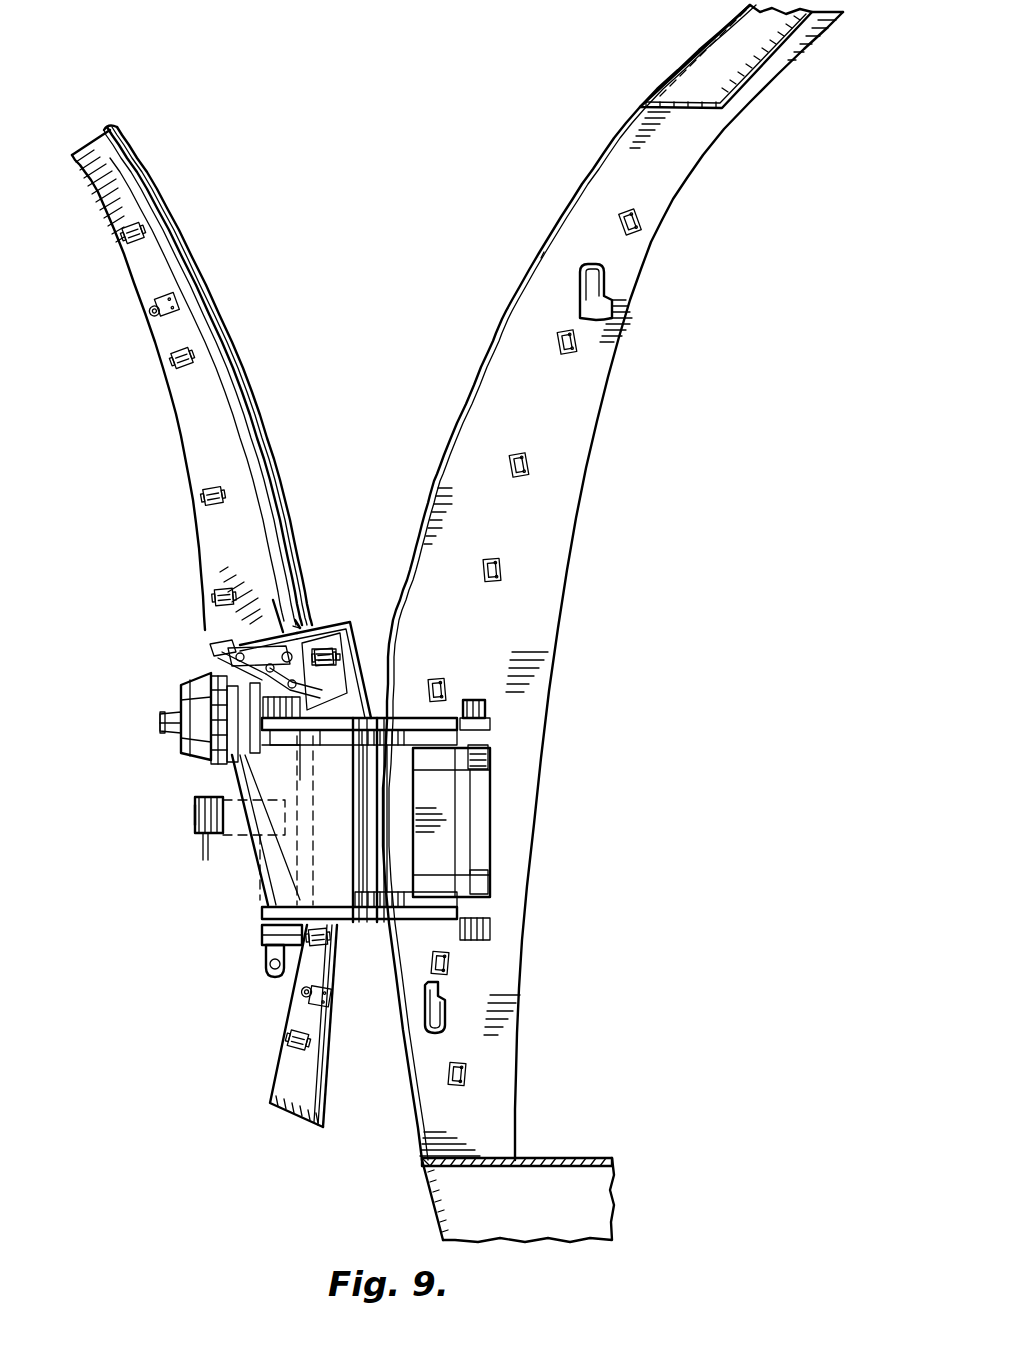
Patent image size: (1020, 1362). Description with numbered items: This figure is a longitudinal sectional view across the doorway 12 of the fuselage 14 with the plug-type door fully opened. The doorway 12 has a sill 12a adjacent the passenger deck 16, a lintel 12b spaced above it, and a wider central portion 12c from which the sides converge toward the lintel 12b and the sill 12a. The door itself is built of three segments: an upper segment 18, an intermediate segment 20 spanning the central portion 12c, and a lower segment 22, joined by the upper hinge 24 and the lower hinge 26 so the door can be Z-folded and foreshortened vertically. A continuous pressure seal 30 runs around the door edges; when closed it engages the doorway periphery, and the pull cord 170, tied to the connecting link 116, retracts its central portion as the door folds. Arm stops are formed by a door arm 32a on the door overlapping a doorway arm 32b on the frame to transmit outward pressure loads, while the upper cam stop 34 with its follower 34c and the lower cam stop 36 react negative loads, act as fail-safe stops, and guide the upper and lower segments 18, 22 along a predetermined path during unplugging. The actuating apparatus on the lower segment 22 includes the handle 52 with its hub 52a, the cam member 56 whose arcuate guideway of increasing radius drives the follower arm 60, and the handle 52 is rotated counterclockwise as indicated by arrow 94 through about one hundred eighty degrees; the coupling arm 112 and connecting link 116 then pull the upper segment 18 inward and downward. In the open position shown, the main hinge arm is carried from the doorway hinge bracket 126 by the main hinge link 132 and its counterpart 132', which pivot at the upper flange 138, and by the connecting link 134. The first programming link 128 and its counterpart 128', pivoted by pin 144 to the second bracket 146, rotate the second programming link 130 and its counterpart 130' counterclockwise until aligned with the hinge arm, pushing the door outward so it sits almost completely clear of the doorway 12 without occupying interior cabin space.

The doorway 12 is at (522, 276).
The sill 12a is at (425, 1162).
The lintel 12b is at (640, 118).
The central portion of doorway 12c is at (404, 585).
The fuselage 14 is at (672, 62).
The passenger deck 16 is at (572, 1158).
The upper segment 18 is at (178, 432).
The intermediate segment 20 is at (330, 640).
The lower segment 22 is at (292, 1010).
The upper hinge 24 is at (350, 612).
The lower hinge 26 is at (300, 626).
The pressure seal 30 is at (110, 130).
The door arm 32a is at (146, 232).
The doorway arm 32b is at (642, 228).
The upper cam stop 34 is at (616, 300).
The follower 34c is at (152, 313).
The lower cam stop 36 is at (442, 1000).
The handle 52 is at (160, 727).
The hub 52a is at (190, 697).
The cam member 56 is at (211, 757).
The follower arm 60 is at (232, 770).
The arrow 94 is at (266, 955).
The coupling arm 112 is at (216, 646).
The connecting link 116 is at (238, 650).
The doorway hinge bracket 126 is at (486, 823).
The first programming link 128 is at (359, 697).
The first programming link 128' is at (361, 923).
The second programming link 130 is at (335, 659).
The second programming link 130' is at (246, 932).
The main hinge link 132 is at (405, 790).
The main hinge link 132' is at (378, 866).
The connecting link 134 is at (196, 815).
The upper flange 138 is at (486, 770).
The pivot pin 144 is at (485, 704).
The second bracket 146 is at (490, 722).
The pull cord 170 is at (296, 624).